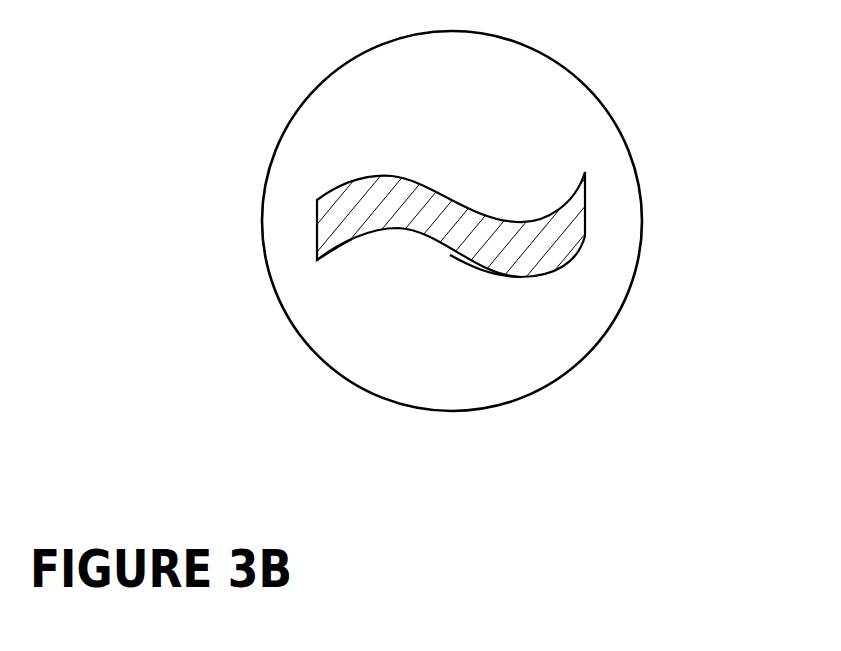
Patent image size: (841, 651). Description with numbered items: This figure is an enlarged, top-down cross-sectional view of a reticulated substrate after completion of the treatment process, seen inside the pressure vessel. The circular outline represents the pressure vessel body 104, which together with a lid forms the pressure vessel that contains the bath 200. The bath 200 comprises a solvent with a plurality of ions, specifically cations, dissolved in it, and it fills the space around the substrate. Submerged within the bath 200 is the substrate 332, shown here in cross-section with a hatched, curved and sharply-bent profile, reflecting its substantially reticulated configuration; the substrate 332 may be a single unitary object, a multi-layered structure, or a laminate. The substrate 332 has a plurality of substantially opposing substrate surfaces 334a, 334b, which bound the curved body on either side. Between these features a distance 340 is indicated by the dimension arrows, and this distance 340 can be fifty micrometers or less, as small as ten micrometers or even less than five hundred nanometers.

The pressure vessel body 104 is at (615, 122).
The bath 200 is at (495, 153).
The substrate 332 is at (573, 232).
The substrate surface 334a is at (467, 263).
The substrate surface 334b is at (334, 246).
The distance 340 is at (473, 262).